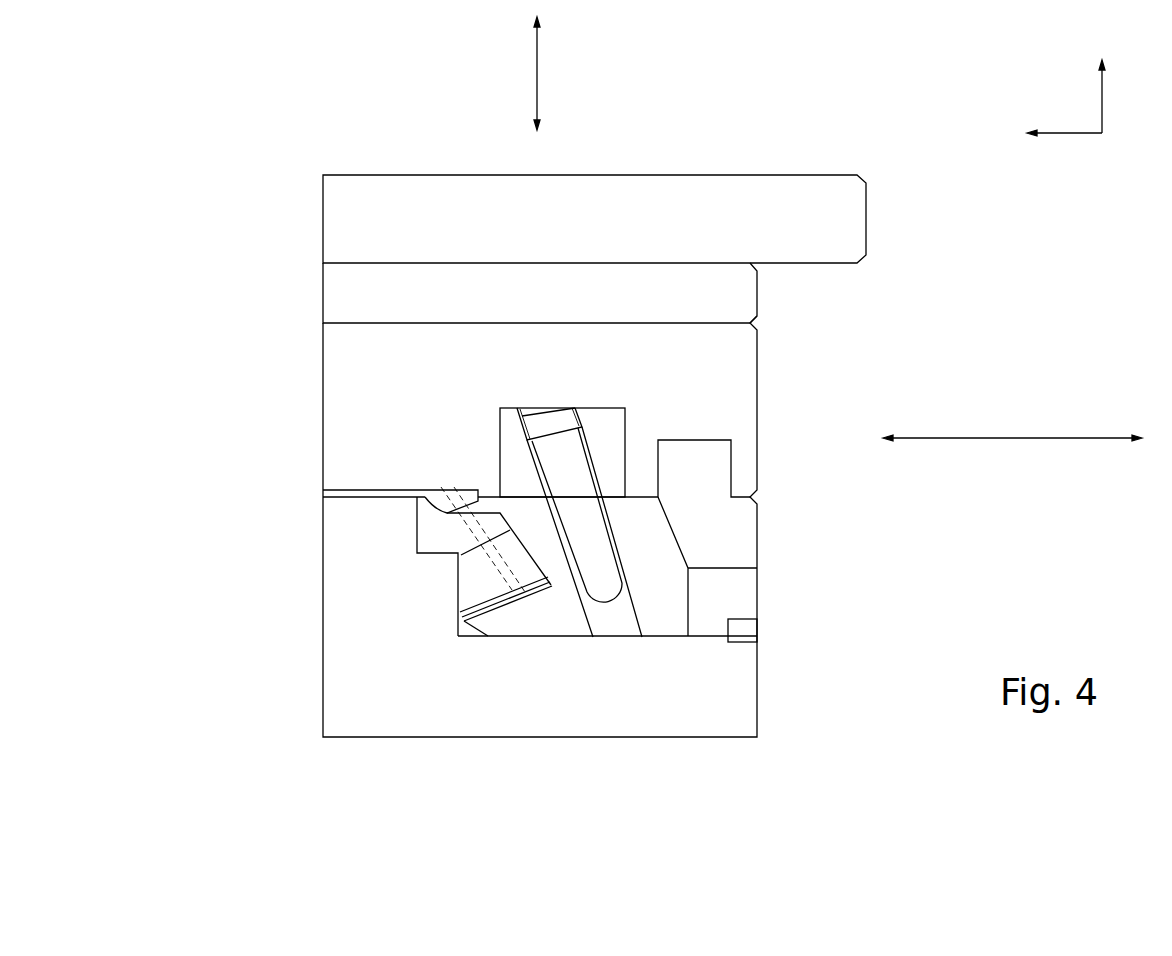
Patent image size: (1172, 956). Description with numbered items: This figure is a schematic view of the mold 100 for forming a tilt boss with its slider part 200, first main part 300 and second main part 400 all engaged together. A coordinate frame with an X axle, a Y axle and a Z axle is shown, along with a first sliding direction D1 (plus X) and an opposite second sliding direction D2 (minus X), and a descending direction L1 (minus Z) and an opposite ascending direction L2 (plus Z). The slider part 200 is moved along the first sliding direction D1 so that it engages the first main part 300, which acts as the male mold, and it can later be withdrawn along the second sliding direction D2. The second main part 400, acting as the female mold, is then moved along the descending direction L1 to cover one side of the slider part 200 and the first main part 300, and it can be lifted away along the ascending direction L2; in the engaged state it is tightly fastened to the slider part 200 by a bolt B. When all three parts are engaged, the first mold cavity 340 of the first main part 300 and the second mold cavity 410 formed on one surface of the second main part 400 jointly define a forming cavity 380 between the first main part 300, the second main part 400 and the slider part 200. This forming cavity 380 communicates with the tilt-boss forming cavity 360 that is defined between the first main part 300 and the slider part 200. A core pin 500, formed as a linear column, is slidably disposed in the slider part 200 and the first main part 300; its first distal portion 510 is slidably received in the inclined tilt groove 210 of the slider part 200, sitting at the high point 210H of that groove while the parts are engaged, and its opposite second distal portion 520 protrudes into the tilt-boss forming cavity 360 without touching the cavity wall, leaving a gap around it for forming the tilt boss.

The mold for forming tilt boss 100 is at (245, 83).
The slider part 200 is at (690, 538).
The tilt groove 210 is at (470, 634).
The high point 210H is at (533, 596).
The first main part 300 is at (313, 594).
The first mold cavity 340 is at (341, 505).
The tilt-boss forming cavity 360 is at (435, 521).
The forming cavity 380 is at (319, 489).
The second main part 400 is at (312, 344).
The second mold cavity 410 is at (346, 481).
The core pin 500 is at (476, 565).
The first distal portion 510 is at (520, 605).
The second distal portion 520 is at (447, 495).
The bolt B is at (570, 458).
The descending direction L1 is at (553, 124).
The ascending direction L2 is at (553, 66).
The first sliding direction D1 is at (1006, 423).
The second sliding direction D2 is at (1129, 423).
The X axle X is at (1052, 135).
The Y axle Y is at (1117, 135).
The Z axle Z is at (1100, 81).